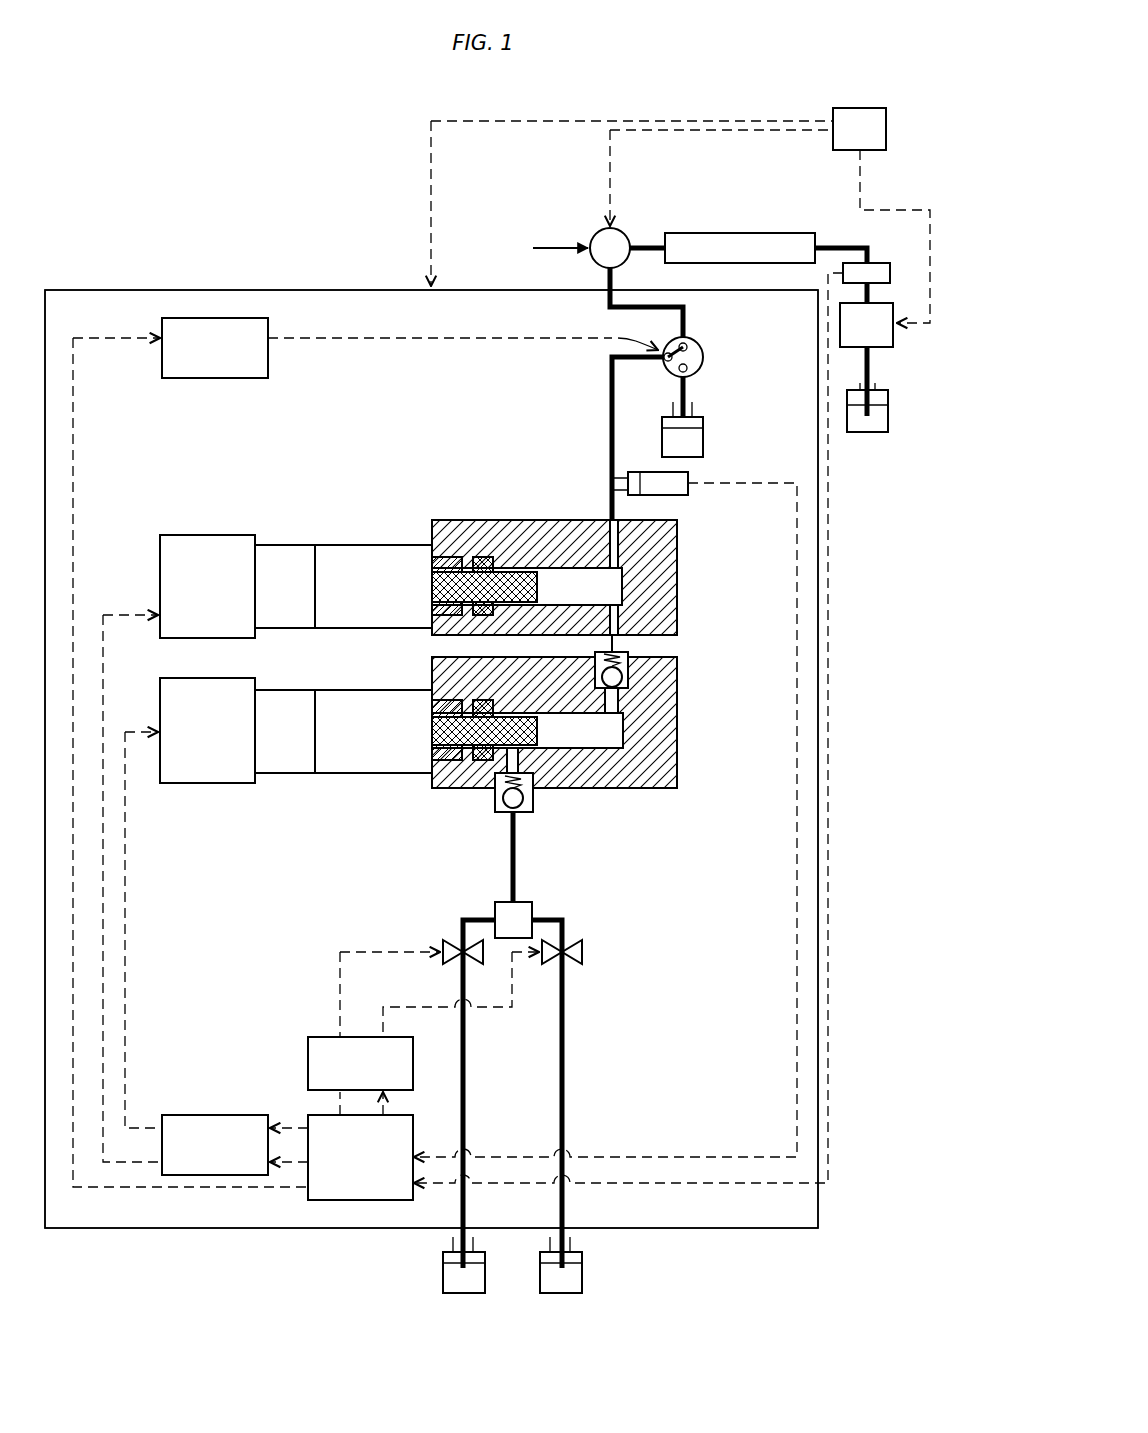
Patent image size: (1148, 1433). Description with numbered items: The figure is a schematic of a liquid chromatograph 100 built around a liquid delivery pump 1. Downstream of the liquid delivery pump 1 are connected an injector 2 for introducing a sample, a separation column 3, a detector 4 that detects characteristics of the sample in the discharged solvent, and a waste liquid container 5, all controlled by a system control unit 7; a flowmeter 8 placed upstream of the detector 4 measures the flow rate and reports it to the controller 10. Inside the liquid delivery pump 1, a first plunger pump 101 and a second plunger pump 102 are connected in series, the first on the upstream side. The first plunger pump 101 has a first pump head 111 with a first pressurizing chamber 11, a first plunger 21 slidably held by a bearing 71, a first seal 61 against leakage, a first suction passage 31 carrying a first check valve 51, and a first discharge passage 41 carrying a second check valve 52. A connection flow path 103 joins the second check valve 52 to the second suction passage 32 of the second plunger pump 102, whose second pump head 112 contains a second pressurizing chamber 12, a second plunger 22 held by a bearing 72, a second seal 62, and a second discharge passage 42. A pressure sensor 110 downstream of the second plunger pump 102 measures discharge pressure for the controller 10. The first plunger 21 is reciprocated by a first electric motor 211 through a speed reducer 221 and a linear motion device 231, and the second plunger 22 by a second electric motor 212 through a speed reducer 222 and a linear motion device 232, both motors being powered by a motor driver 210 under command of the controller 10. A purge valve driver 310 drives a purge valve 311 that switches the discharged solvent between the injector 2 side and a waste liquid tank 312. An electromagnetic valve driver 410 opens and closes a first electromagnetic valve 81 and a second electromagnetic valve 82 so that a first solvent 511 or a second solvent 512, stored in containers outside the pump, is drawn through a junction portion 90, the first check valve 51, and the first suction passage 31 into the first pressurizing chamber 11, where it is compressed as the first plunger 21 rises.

The liquid chromatograph 100 is at (103, 221).
The liquid delivery pump 1 is at (320, 290).
The injector 2 is at (625, 232).
The separation column 3 is at (740, 233).
The detector 4 is at (893, 311).
The waste liquid container 5 is at (888, 398).
The system control unit 7 is at (886, 137).
The flowmeter 8 is at (890, 268).
The controller 10 is at (318, 1115).
The first pressurizing chamber 11 is at (618, 737).
The second pressurizing chamber 12 is at (600, 585).
The first plunger 21 is at (545, 735).
The second plunger 22 is at (520, 572).
The first suction passage 31 is at (520, 755).
The second suction passage 32 is at (620, 618).
The first discharge passage 41 is at (618, 700).
The second discharge passage 42 is at (610, 540).
The first check valve 51 is at (533, 808).
The second check valve 52 is at (628, 670).
The first seal 61 is at (483, 762).
The second seal 62 is at (483, 557).
The bearing 71 is at (446, 762).
The bearing 72 is at (446, 557).
The first electromagnetic valve 81 is at (447, 940).
The second electromagnetic valve 82 is at (582, 952).
The junction portion 90 is at (495, 902).
The first plunger pump 101 is at (554, 771).
The second plunger pump 102 is at (560, 550).
The connection flow path 103 is at (616, 643).
The pressure sensor 110 is at (688, 480).
The first pump head 111 is at (430, 670).
The second pump head 112 is at (430, 535).
The motor driver 210 is at (192, 1115).
The first electric motor 211 is at (208, 783).
The second electric motor 212 is at (205, 535).
The speed reducer 221 is at (282, 773).
The speed reducer 222 is at (277, 545).
The linear motion device 231 is at (342, 773).
The linear motion device 232 is at (342, 545).
The purge valve driver 310 is at (210, 378).
The purge valve 311 is at (703, 357).
The waste liquid tank 312 is at (703, 423).
The electromagnetic valve driver 410 is at (308, 1040).
The first solvent 511 is at (465, 1293).
The second solvent 512 is at (565, 1293).